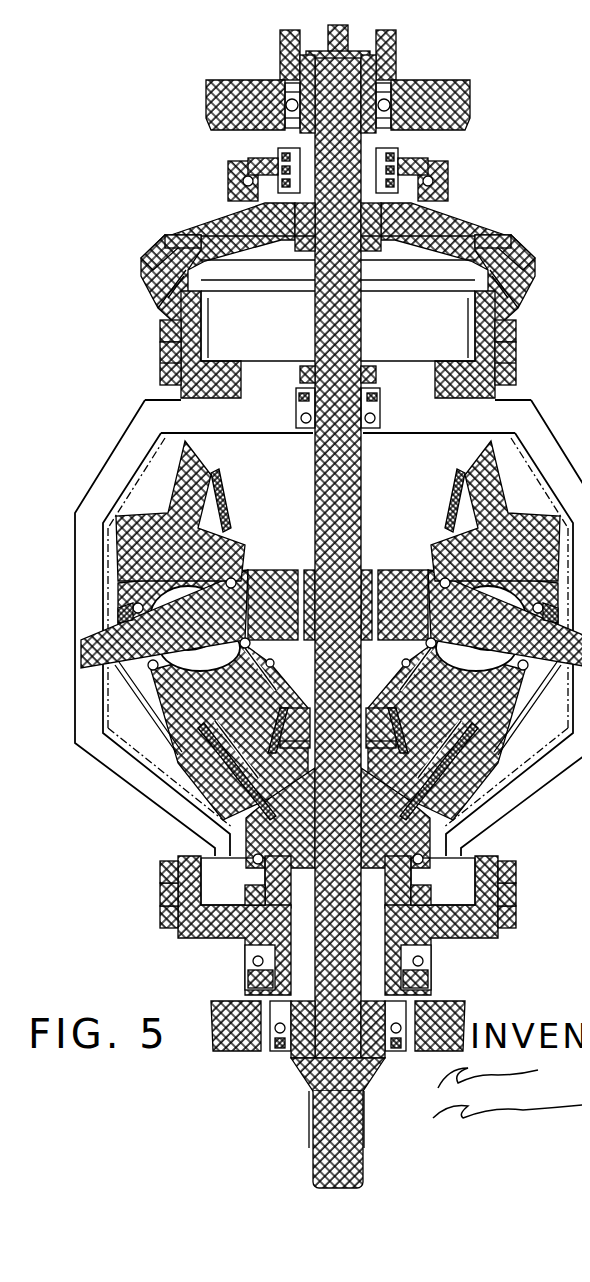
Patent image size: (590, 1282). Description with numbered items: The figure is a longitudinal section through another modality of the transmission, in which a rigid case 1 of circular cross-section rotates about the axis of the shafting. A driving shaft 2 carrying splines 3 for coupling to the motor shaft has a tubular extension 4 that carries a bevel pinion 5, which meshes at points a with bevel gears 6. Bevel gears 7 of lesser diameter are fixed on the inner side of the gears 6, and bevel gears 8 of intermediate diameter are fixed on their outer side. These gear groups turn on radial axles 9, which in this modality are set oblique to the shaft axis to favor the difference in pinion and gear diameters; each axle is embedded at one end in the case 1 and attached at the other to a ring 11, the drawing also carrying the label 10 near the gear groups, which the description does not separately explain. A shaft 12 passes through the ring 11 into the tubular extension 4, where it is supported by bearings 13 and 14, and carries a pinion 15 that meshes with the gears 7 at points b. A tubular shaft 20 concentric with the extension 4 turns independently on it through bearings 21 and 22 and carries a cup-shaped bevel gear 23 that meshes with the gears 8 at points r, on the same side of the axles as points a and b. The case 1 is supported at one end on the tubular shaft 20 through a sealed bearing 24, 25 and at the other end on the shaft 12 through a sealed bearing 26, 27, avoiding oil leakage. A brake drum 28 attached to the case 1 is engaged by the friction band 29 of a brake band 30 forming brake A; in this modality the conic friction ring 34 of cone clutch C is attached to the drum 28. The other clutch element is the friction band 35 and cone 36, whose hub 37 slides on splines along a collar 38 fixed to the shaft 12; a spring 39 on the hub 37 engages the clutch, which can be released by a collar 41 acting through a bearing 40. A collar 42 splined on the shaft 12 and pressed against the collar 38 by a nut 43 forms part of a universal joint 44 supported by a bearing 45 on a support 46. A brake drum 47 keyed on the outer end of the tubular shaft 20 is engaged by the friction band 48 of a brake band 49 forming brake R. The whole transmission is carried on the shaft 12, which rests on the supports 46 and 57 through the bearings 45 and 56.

The rigid case 1 is at (72, 570).
The driving shaft 2 is at (318, 1160).
The splines 3 is at (302, 1125).
The tubular extension 4 is at (298, 1060).
The bevel pinion 5 is at (338, 729).
The bevel gears 6 is at (338, 713).
The bevel gears 7 is at (338, 650).
The bevel gears 8 is at (175, 715).
The radial axles 9 is at (205, 604).
The rotor star 10 is at (218, 577).
The ring 11 is at (272, 585).
The shaft 12 is at (318, 300).
The bearing 13 is at (365, 1045).
The bearing 14 is at (338, 743).
The pinion 15 is at (338, 730).
The tubular shaft 20 is at (270, 922).
The bearing 21 is at (245, 955).
The bearing 22 is at (245, 790).
The cup-shaped bevel gear 23 is at (225, 760).
The sealed bearing 24 is at (246, 852).
The sealed bearing 25 is at (238, 885).
The sealed bearing 26 is at (295, 418).
The sealed bearing 27 is at (294, 370).
The brake drum 28 is at (185, 365).
The friction band 29 is at (156, 345).
The brake band 30 is at (154, 322).
The tapered extension 34 is at (158, 272).
The friction band 35 is at (148, 248).
The cone 36 is at (160, 232).
The hub 37 is at (262, 222).
The collar 38 is at (292, 235).
The spring 39 is at (272, 150).
The bearing 40 is at (232, 172).
The collar 41 is at (242, 160).
The collar 42 is at (295, 70).
The nut 43 is at (362, 47).
The universal joint 44 is at (272, 45).
The bearing 45 is at (280, 100).
The support 46 is at (222, 92).
The brake drum 47 is at (190, 910).
The friction band 48 is at (165, 888).
The brake band 49 is at (160, 862).
The bearing 56 is at (270, 1040).
The support 57 is at (235, 1030).
The gearing points a is at (331, 816).
The gearing points b is at (315, 645).
The gearing points r is at (200, 765).
The brake A is at (92, 386).
The cone clutch C is at (92, 208).
The brake R is at (104, 916).